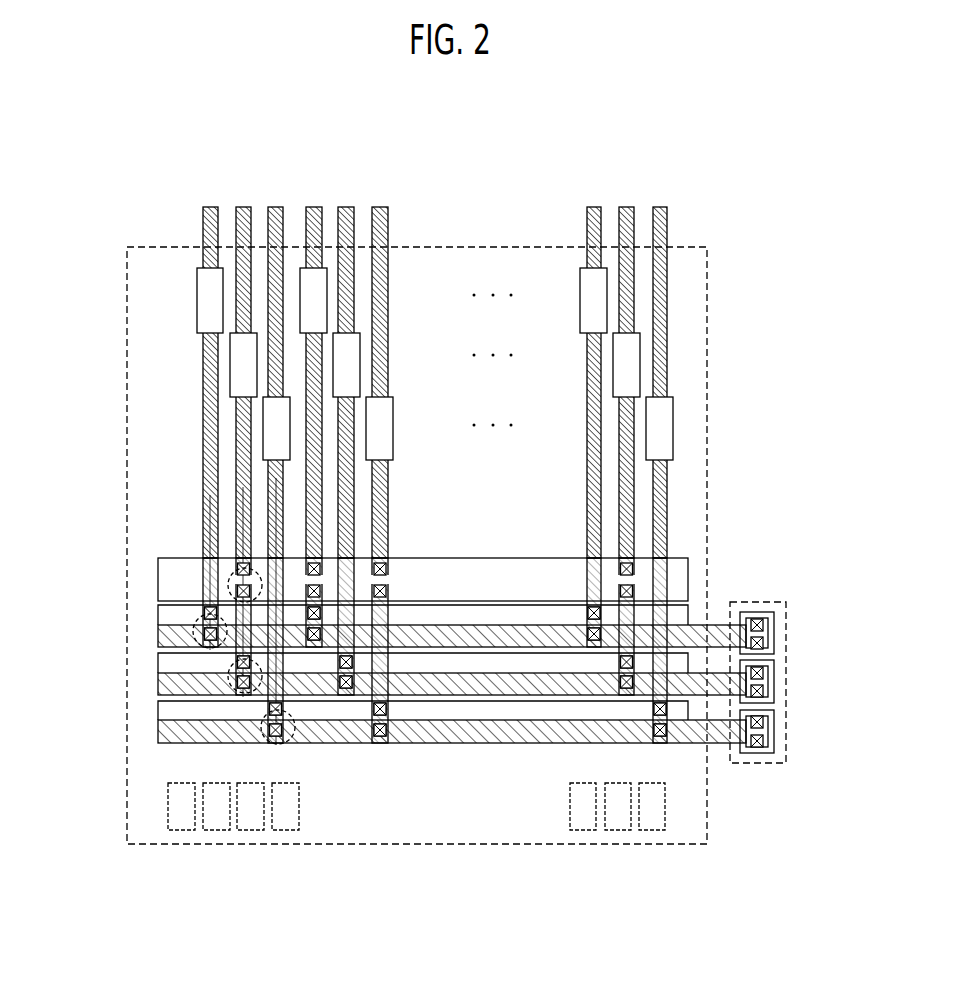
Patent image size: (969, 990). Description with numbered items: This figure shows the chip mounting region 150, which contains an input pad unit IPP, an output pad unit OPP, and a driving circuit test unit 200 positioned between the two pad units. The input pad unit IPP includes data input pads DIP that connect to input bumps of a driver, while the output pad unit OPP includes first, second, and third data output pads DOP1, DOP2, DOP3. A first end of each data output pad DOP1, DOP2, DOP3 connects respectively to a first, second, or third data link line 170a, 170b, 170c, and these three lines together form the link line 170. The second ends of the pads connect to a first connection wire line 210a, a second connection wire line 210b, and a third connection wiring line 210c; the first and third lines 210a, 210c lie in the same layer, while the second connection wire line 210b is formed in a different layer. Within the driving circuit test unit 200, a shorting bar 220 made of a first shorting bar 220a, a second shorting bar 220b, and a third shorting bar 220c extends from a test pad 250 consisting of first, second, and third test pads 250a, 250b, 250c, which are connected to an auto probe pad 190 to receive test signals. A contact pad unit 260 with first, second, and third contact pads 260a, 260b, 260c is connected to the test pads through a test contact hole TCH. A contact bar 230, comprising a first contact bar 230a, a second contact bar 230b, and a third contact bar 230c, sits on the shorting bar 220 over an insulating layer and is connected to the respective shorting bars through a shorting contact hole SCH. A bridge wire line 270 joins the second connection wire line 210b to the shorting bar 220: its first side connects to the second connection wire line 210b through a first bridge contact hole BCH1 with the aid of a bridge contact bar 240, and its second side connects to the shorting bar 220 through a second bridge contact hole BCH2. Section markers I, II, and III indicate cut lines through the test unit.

The chip mounting region 150 is at (707, 258).
The link line 170 is at (196, 198).
The first data link line 170a is at (210, 208).
The second data link line 170b is at (243, 208).
The third data link line 170c is at (284, 208).
The auto probe pad 190 is at (787, 614).
The driving circuit test unit 200 is at (127, 758).
The first connection wire line 210a is at (590, 362).
The second connection wire line 210b is at (626, 420).
The third connection wiring line 210c is at (662, 483).
The shorting bar 220 is at (378, 899).
The first shorting bar 220a is at (420, 640).
The second shorting bar 220b is at (465, 690).
The third shorting bar 220c is at (502, 732).
The contact bar 230 is at (70, 630).
The first contact bar 230a is at (410, 750).
The second contact bar 230b is at (410, 774).
The third contact bar 230c is at (410, 798).
The bridge contact bar 240 is at (680, 556).
The test pad 250 is at (848, 636).
The first test pad 250a is at (770, 640).
The second test pad 250b is at (770, 684).
The third test pad 250c is at (770, 728).
The contact pad unit 260 is at (690, 899).
The first contact pad 260a is at (738, 655).
The second contact pad 260b is at (742, 703).
The third contact pad 260c is at (762, 752).
The bridge wire line 270 is at (390, 604).
The output pad unit OPP is at (127, 458).
The input pad unit IPP is at (127, 762).
The first data output pad DOP1 is at (197, 293).
The second data output pad DOP2 is at (230, 349).
The third data output pad DOP3 is at (263, 428).
The data input pad DIP is at (180, 828).
The shorting contact hole SCH is at (195, 612).
The first bridge contact hole BCH1 is at (230, 574).
The second bridge contact hole BCH2 is at (230, 680).
The test contact hole TCH is at (770, 742).
The section line I-I' I is at (204, 495).
The section line II-II' II is at (232, 487).
The section line III-III' III is at (267, 478).